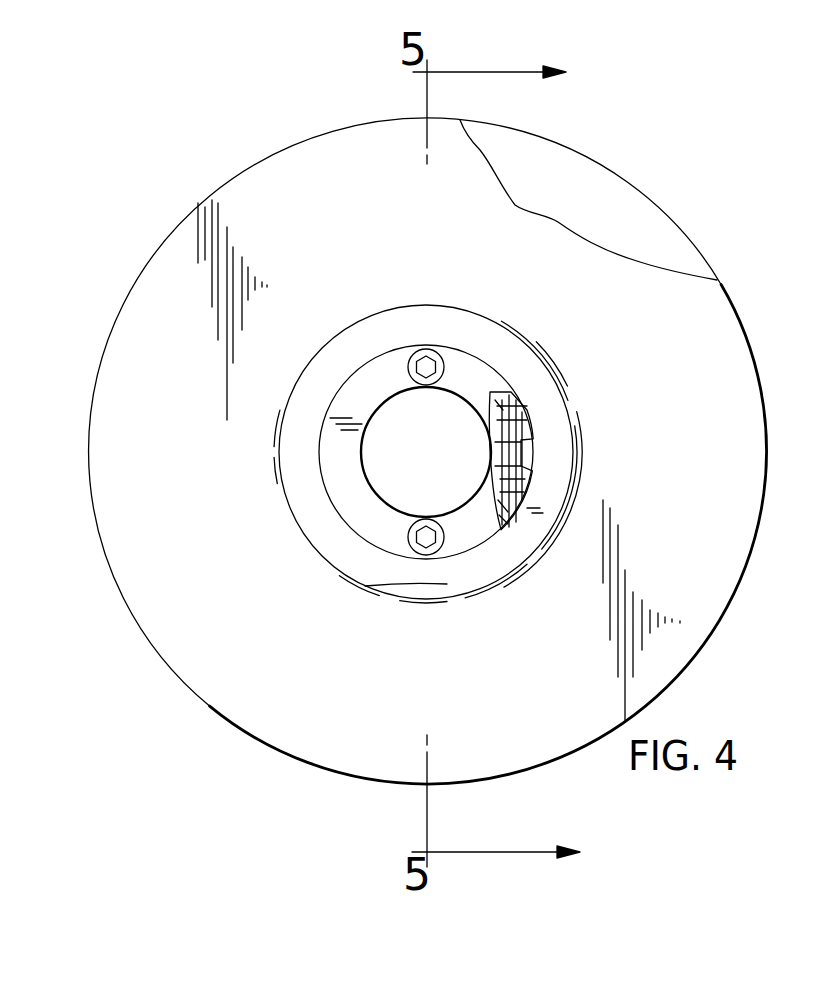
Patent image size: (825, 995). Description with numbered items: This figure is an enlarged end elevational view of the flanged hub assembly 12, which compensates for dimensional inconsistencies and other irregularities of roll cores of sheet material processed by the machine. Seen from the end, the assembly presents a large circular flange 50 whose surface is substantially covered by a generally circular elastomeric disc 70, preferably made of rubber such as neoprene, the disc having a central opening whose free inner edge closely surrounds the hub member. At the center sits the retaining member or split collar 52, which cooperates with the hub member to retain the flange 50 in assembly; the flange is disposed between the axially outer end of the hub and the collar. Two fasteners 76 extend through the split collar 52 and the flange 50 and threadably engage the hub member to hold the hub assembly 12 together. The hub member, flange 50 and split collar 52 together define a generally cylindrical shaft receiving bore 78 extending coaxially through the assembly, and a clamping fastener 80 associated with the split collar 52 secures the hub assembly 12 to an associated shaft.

The hub assembly 12 is at (640, 144).
The flange 50 is at (713, 573).
The split collar 52 is at (350, 523).
The elastomeric disc 70 is at (652, 237).
The fasteners 76 is at (418, 350).
The shaft receiving bore 78 is at (396, 496).
The clamping fastener 80 is at (522, 408).